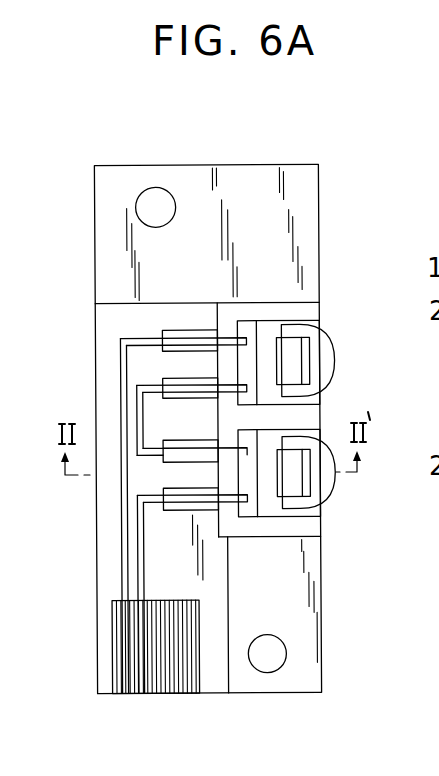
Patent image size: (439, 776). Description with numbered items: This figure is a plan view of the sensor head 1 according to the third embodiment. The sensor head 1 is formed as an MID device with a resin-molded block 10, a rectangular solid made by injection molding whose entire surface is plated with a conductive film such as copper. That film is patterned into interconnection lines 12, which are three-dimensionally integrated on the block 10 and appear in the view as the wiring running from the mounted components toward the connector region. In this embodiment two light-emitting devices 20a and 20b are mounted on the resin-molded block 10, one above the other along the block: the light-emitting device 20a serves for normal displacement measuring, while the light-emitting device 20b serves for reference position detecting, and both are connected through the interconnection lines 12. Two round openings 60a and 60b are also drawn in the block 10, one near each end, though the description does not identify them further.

The sensor head 1 is at (324, 136).
The resin-molded block 10 is at (107, 325).
The interconnection lines 12 is at (121, 567).
The light-emitting device 20a is at (333, 494).
The light-emitting device 20b is at (335, 359).
The mounting hole 60a is at (149, 188).
The mounting hole 60b is at (274, 673).